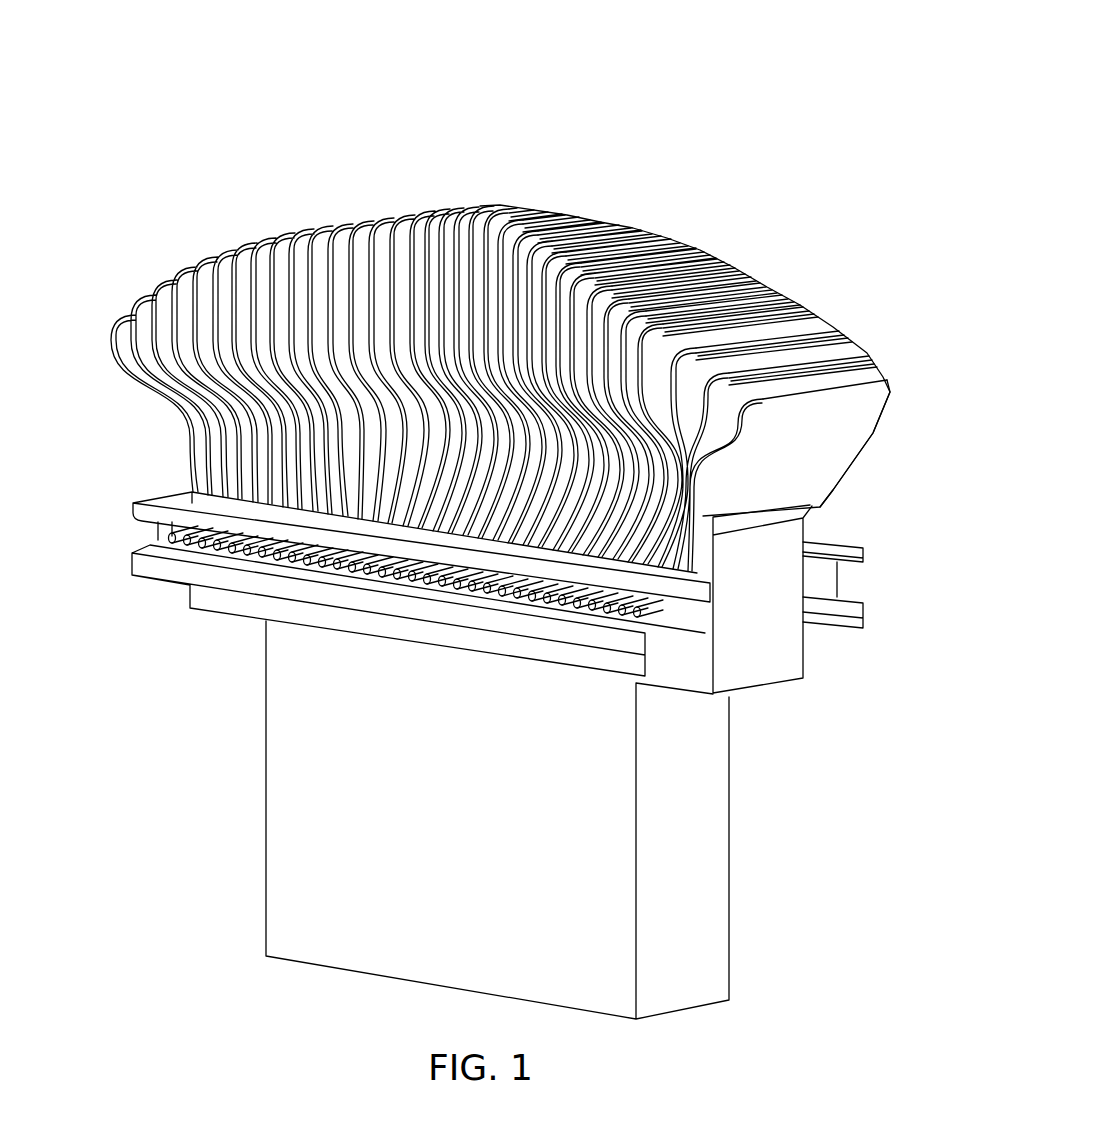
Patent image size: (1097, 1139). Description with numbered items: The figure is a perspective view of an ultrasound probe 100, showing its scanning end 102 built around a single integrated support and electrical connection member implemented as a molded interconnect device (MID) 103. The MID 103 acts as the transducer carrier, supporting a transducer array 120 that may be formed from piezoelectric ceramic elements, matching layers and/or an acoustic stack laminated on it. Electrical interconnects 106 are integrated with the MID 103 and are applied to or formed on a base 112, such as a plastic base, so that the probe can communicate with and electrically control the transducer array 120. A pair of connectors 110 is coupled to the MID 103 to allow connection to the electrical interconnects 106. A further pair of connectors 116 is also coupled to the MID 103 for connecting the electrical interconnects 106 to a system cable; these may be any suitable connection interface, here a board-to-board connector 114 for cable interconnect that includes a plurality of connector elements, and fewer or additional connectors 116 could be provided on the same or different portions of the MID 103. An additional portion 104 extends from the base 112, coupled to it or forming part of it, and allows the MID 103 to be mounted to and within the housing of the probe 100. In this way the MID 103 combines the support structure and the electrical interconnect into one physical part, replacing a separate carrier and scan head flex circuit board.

The ultrasound probe 100 is at (652, 75).
The scanning end 102 is at (394, 198).
The transducer array 120 is at (551, 188).
The electrical interconnects 106 is at (667, 238).
The base 112 is at (862, 425).
The connectors 110 is at (710, 468).
The molded interconnect device (MID) 103 is at (822, 511).
The connectors 116 is at (133, 509).
The board-to-board connector 114 is at (657, 618).
The additional portion 104 is at (715, 933).